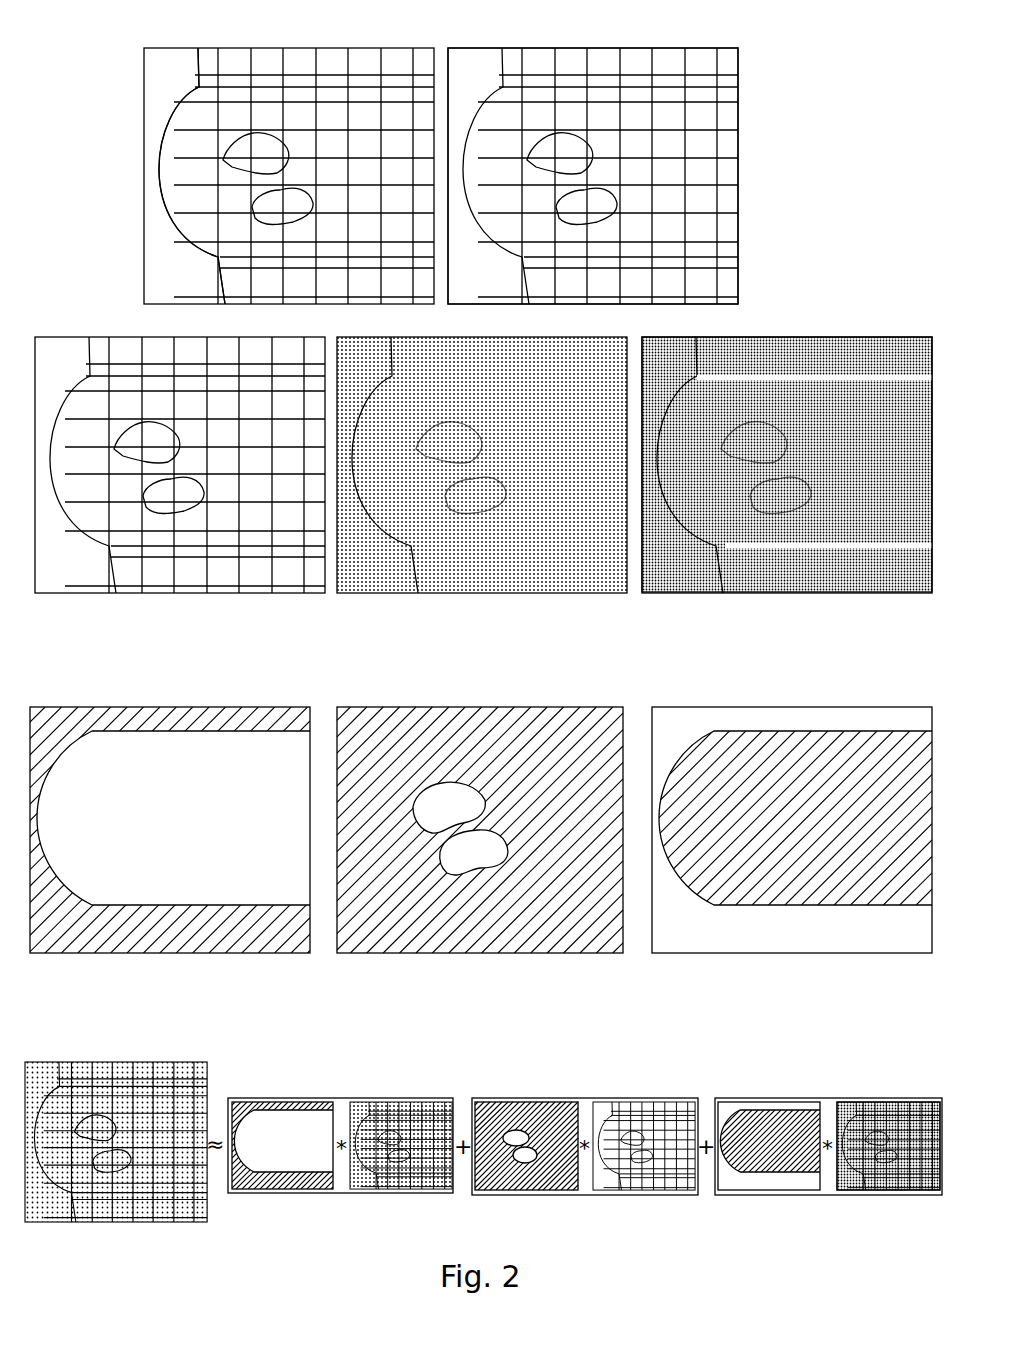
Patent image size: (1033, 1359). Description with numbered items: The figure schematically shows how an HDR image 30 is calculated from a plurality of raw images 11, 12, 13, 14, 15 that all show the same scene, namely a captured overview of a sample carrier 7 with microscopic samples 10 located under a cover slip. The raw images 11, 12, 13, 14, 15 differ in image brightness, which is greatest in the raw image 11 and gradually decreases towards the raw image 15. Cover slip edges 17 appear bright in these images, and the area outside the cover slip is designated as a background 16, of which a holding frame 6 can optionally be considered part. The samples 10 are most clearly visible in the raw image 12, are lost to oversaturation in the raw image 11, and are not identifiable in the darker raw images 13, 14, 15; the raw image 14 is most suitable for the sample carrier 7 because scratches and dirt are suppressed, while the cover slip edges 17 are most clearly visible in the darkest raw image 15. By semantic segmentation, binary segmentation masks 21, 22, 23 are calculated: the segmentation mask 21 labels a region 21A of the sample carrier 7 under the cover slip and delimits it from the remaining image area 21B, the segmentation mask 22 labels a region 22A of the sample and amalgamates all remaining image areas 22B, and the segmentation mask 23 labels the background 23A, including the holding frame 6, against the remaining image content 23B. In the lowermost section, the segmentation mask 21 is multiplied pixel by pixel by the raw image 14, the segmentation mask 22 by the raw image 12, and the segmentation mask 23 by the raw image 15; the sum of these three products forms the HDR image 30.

The holding frame 6 is at (190, 260).
The sample carrier 7 is at (696, 146).
The microscopic samples 10 is at (227, 160).
The raw image 11 is at (303, 42).
The raw image 12 is at (683, 42).
The raw image 13 is at (158, 601).
The raw image 14 is at (462, 598).
The raw image 15 is at (788, 601).
The background 16 is at (713, 54).
The cover slip edges 17 is at (713, 89).
The segmentation mask 21 is at (156, 695).
The region of the sample carrier under the cover slip 21A is at (193, 839).
The remaining image area 21B is at (53, 908).
The segmentation mask 22 is at (415, 695).
The region of the sample 22A is at (474, 816).
The remaining image areas 22B is at (528, 902).
The segmentation mask 23 is at (803, 695).
The background 23A is at (823, 941).
The remaining image content 23B is at (857, 900).
The HDR image 30 is at (140, 1050).